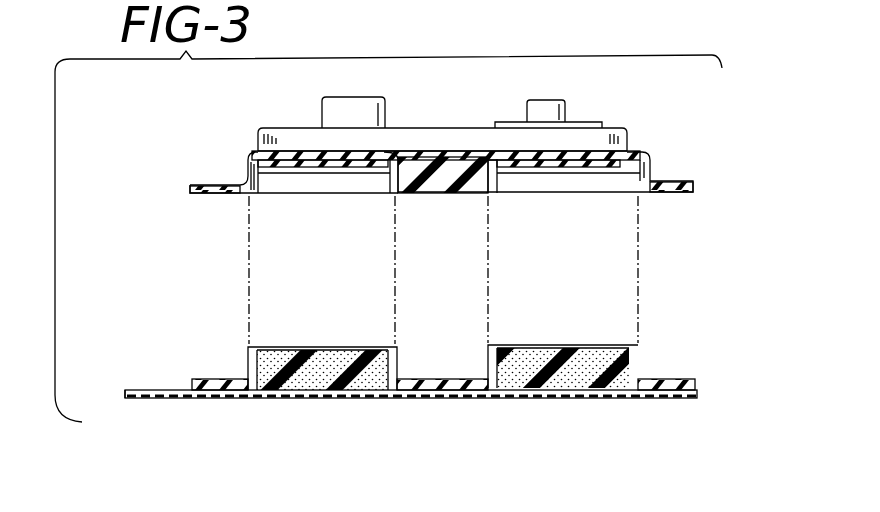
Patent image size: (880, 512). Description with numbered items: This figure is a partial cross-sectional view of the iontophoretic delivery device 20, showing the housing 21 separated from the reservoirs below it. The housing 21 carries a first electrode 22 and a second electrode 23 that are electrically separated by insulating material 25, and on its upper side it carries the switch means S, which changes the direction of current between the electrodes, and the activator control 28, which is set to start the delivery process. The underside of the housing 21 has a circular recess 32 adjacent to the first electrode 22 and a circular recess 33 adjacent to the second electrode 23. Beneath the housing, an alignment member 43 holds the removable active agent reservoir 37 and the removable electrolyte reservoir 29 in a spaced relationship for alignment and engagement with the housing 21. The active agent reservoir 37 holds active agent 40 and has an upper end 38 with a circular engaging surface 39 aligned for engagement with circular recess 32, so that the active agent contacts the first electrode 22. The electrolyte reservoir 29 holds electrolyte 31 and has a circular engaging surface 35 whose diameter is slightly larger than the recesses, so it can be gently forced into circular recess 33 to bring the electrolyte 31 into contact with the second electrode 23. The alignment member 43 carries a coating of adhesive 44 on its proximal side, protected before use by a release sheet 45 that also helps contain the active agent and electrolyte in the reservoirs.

The iontophoretic delivery device 20 is at (130, 165).
The switch means S is at (326, 106).
The activator control 28 is at (568, 112).
The housing 21 is at (655, 162).
The first electrode 22 is at (283, 195).
The circular recess 32 is at (378, 195).
The insulating material 25 is at (475, 175).
The circular recess 33 is at (500, 170).
The second electrode 23 is at (610, 170).
The alignment member 43 is at (452, 393).
The release sheet 45 is at (130, 392).
The adhesive 44 is at (192, 390).
The circular engaging surface 39 is at (413, 345).
The electrolyte reservoir 29 is at (640, 360).
The active agent reservoir 37 is at (238, 340).
The upper end 38 is at (265, 342).
The active agent 40 is at (352, 342).
The circular engaging surface 35 is at (488, 357).
The electrolyte 31 is at (563, 326).